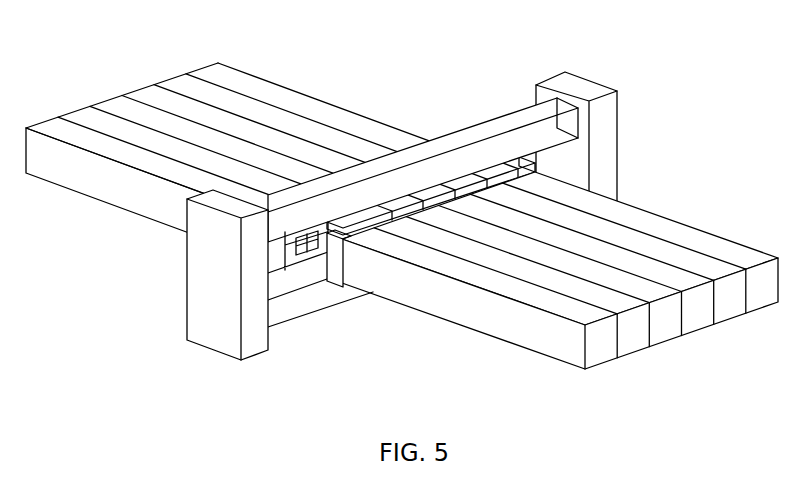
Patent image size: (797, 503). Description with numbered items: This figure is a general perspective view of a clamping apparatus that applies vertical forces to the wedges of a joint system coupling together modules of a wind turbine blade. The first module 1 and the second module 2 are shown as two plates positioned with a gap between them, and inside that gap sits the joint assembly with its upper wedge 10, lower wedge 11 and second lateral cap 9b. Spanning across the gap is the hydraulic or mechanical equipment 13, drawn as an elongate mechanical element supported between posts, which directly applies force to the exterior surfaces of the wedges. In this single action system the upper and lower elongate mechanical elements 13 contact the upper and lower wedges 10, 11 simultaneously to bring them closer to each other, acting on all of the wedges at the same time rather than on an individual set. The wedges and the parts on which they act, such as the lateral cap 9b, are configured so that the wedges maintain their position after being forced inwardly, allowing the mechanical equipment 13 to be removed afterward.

The first module 1 is at (257, 88).
The second module 2 is at (665, 227).
The hydraulic or mechanical equipment 13 is at (477, 130).
The upper wedge 10 is at (314, 242).
The lower wedge 11 is at (320, 252).
The second lateral cap 9b is at (338, 264).